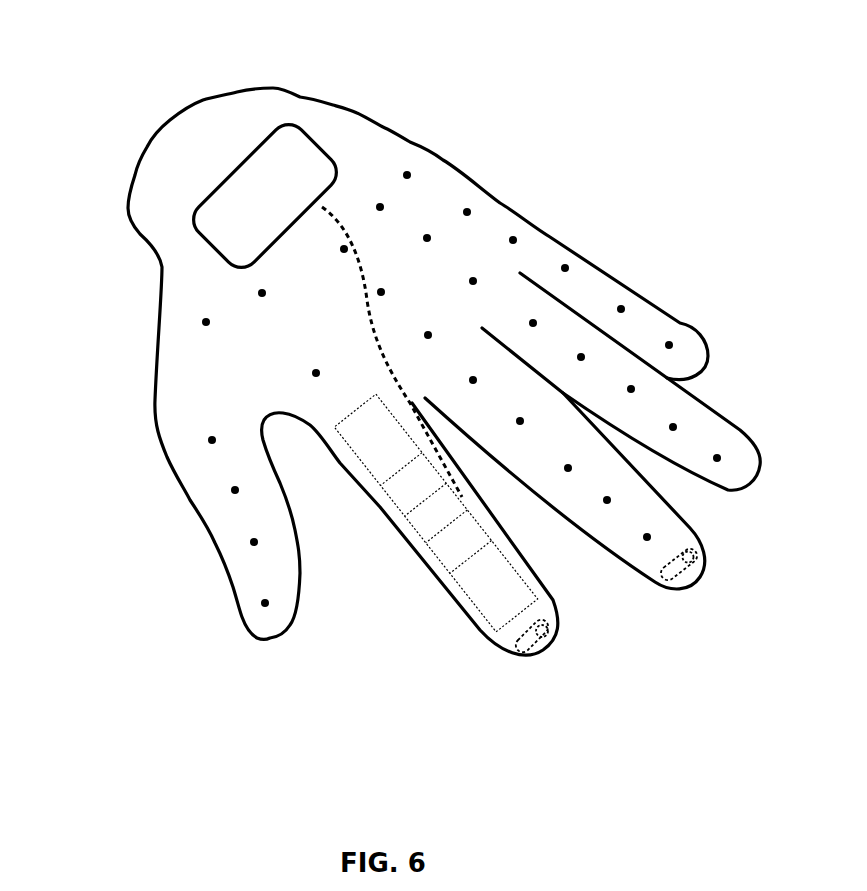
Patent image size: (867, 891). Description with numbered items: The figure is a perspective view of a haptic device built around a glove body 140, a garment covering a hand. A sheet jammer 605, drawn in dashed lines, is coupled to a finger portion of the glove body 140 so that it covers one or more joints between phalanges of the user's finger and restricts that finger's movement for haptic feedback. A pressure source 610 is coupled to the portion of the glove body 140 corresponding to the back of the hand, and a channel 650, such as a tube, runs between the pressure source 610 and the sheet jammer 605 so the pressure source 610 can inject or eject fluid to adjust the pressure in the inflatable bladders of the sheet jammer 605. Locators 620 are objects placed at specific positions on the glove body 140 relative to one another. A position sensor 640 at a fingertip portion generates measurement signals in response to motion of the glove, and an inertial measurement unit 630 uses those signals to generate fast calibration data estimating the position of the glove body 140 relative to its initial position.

The glove body 140 is at (162, 267).
The pressure source 610 is at (283, 165).
The locators 620 is at (570, 260).
The channel 650 is at (357, 282).
The sheet jammer 605 is at (433, 553).
The inertial measurement unit 630 is at (528, 652).
The position sensor 640 is at (547, 627).